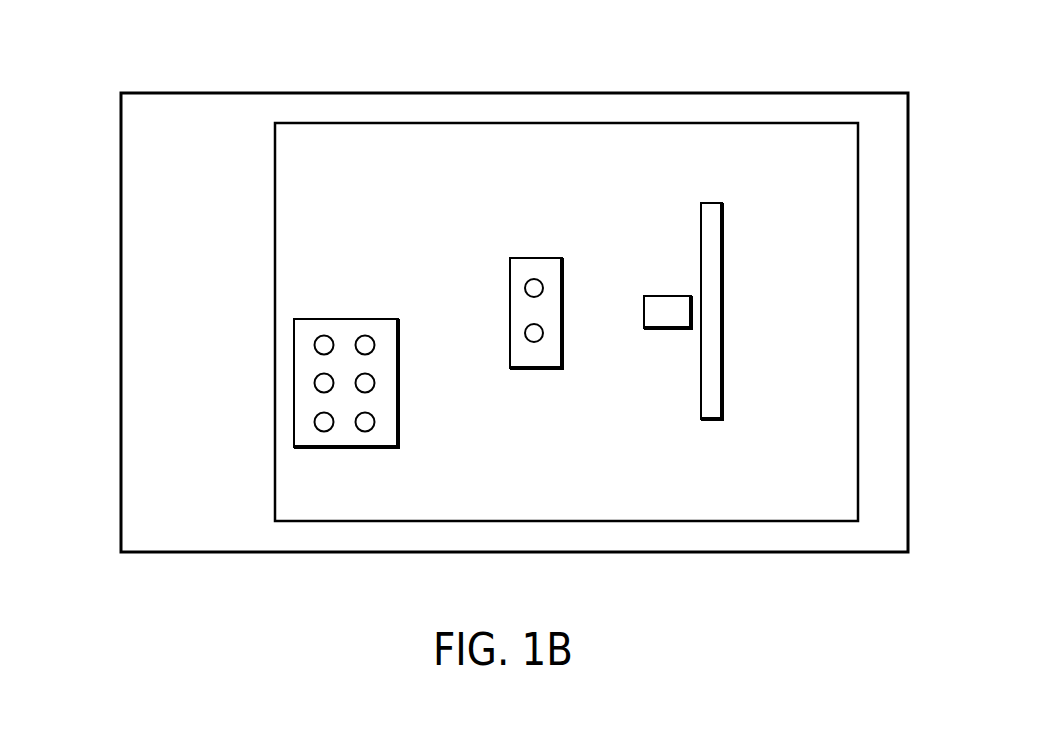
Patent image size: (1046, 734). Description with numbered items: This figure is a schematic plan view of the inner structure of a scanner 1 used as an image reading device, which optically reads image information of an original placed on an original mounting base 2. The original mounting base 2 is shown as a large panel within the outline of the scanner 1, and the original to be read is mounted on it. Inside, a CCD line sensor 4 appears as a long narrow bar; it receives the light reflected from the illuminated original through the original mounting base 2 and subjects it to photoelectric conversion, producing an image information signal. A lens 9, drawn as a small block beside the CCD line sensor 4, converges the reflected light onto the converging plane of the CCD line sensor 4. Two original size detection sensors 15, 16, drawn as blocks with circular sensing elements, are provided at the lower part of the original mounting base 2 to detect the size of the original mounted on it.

The scanner 1 is at (121, 309).
The original mounting base 2 is at (800, 123).
The CCD line sensor 4 is at (710, 202).
The lens 9 is at (663, 295).
The original size detection sensor 15 is at (345, 318).
The original size detection sensor 16 is at (535, 257).